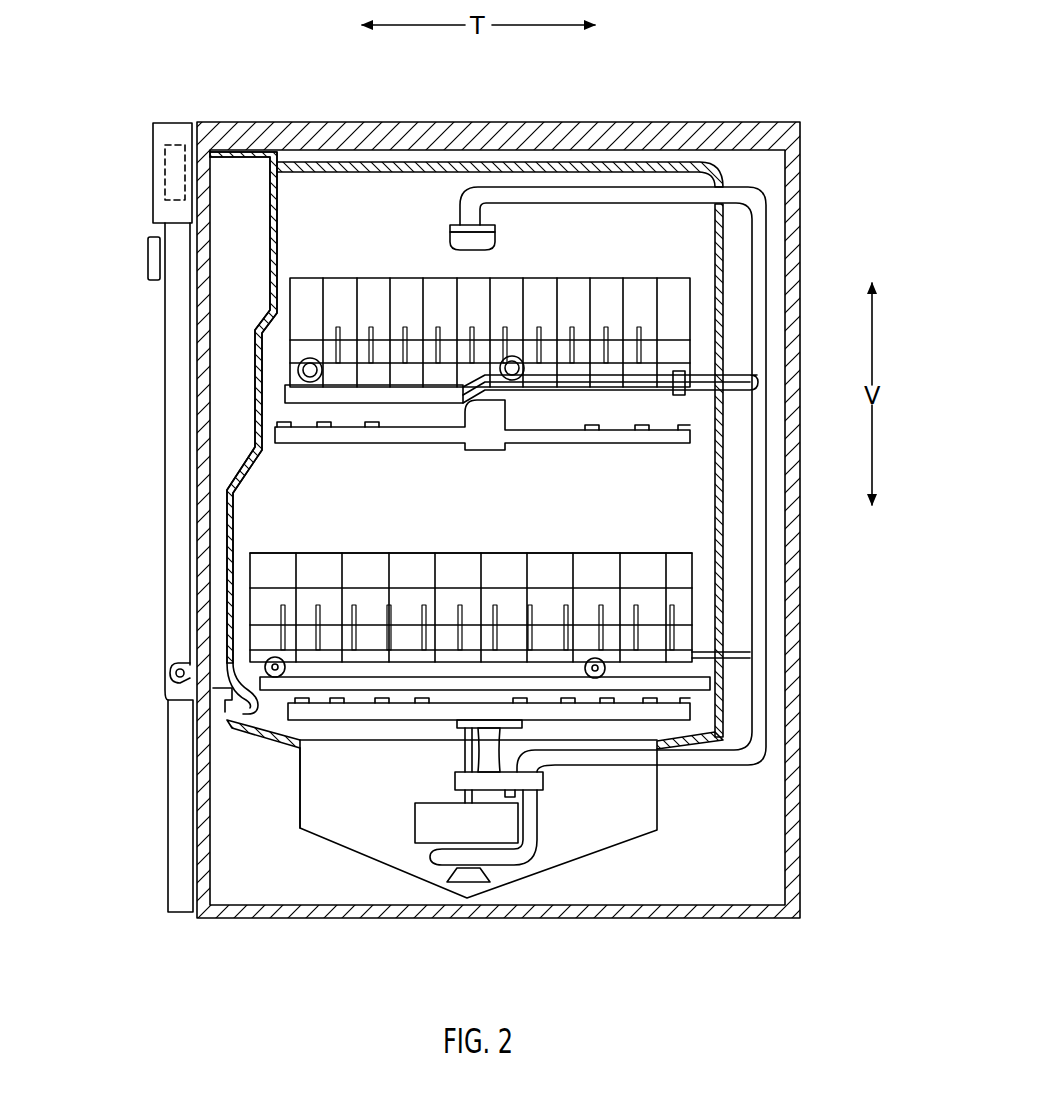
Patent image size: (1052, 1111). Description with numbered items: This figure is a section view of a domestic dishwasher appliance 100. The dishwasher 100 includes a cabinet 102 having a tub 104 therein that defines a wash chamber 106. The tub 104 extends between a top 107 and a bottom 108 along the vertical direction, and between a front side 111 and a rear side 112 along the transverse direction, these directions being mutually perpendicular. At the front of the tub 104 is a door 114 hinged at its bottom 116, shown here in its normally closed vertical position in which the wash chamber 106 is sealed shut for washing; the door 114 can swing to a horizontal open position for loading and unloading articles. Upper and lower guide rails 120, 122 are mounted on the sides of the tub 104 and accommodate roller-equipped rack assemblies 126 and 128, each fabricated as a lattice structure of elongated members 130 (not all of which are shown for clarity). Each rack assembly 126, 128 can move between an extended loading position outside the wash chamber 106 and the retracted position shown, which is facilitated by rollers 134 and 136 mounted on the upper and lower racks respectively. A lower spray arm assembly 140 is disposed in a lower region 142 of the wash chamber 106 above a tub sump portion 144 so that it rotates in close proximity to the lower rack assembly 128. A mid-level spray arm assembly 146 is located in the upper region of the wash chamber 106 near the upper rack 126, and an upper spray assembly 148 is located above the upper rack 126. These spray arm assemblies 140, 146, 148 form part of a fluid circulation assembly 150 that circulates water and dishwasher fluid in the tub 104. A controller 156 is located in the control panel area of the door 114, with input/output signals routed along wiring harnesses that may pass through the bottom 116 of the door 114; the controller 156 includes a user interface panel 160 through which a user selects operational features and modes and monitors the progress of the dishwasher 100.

The dishwasher appliance 100 is at (666, 82).
The cabinet 102 is at (800, 177).
The tub 104 is at (386, 511).
The wash chamber 106 is at (268, 500).
The top 107 is at (396, 174).
The bottom 108 is at (702, 721).
The front side 111 is at (287, 197).
The rear side 112 is at (710, 228).
The door 114 is at (165, 573).
The bottom of door 116 is at (177, 688).
The upper guide rail 120 is at (292, 378).
The lower guide rail 122 is at (231, 706).
The upper rack assembly 126 is at (346, 268).
The lower rack assembly 128 is at (596, 546).
The elongated members 130 is at (405, 552).
The rollers 134 is at (300, 388).
The rollers 136 is at (588, 661).
The lower spray arm assembly 140 is at (617, 712).
The lower region 142 is at (698, 667).
The tub sump portion 144 is at (300, 780).
The mid-level spray arm assembly 146 is at (520, 435).
The upper spray assembly 148 is at (490, 247).
The fluid circulation assembly 150 is at (775, 498).
The controller 156 is at (165, 150).
The user interface panel 160 is at (150, 258).